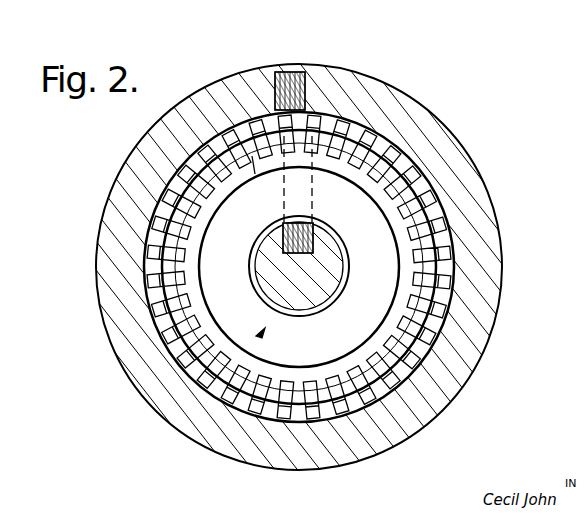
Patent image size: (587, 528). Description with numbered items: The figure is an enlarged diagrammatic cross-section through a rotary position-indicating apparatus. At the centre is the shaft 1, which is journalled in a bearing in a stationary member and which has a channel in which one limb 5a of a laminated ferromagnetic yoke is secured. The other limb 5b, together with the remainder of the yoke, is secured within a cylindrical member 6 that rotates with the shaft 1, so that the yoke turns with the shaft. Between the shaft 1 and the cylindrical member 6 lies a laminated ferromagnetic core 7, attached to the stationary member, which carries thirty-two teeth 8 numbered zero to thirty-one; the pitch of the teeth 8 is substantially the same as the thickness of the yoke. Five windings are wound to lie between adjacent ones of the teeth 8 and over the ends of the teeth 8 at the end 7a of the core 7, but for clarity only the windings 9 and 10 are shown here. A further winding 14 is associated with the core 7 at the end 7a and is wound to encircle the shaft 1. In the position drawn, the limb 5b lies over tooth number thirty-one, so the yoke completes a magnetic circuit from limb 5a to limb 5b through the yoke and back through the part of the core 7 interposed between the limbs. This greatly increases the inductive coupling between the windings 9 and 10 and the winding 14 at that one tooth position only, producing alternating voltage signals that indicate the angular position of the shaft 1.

The shaft 1 is at (313, 293).
The limb of the yoke 5a is at (283, 252).
The limb of the yoke 5b is at (296, 72).
The cylindrical member 6 is at (362, 83).
The laminated ferromagnetic core 7 is at (310, 343).
The end of the core 7a is at (265, 328).
The teeth 8 is at (442, 220).
The winding 9 is at (400, 165).
The winding 10 is at (182, 177).
The winding 14 is at (343, 178).